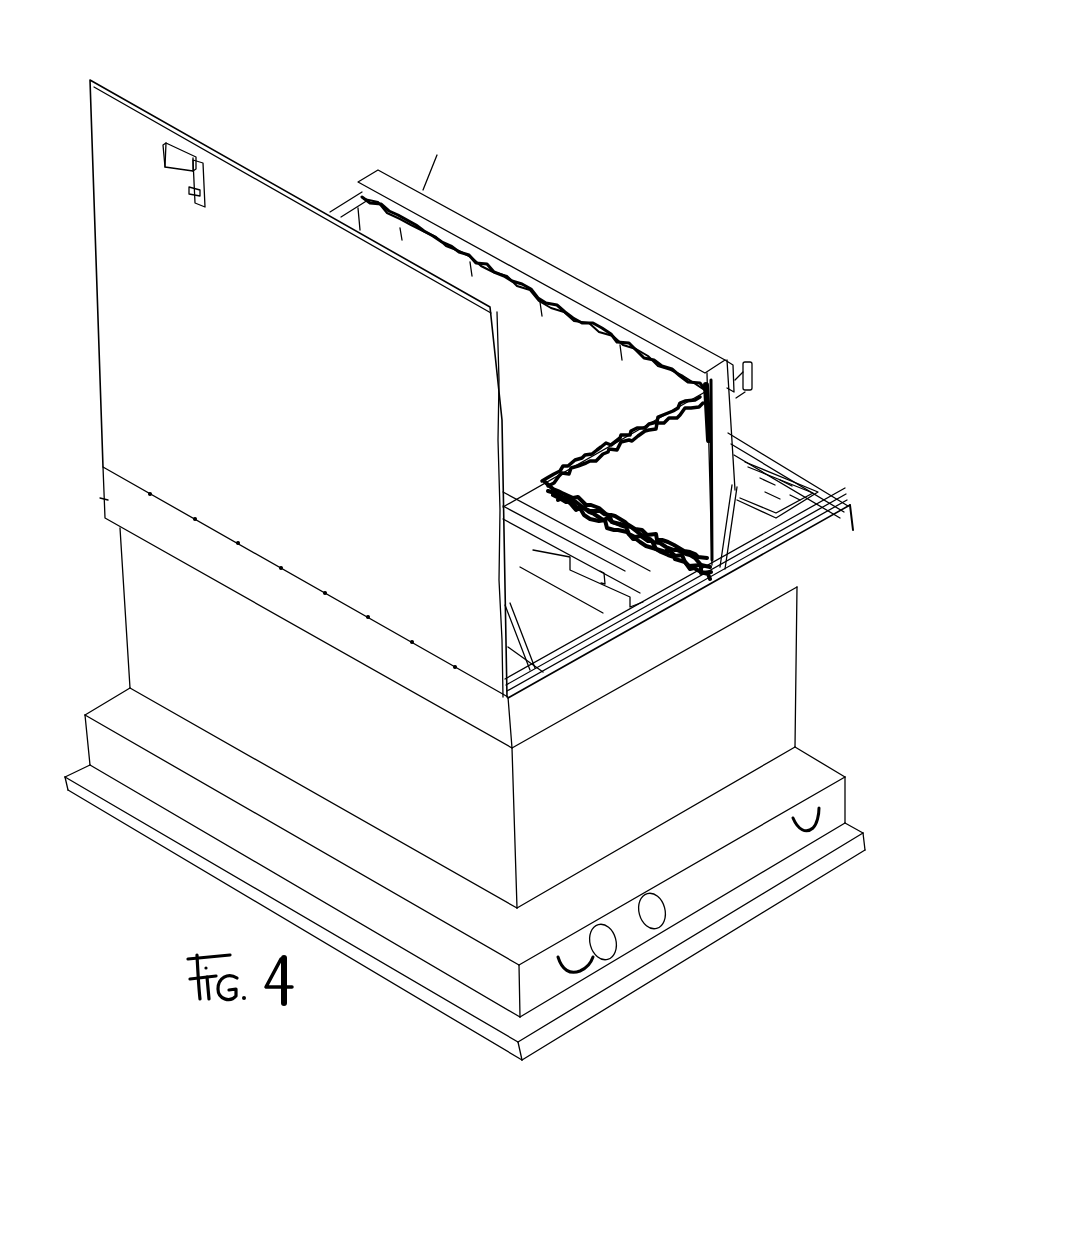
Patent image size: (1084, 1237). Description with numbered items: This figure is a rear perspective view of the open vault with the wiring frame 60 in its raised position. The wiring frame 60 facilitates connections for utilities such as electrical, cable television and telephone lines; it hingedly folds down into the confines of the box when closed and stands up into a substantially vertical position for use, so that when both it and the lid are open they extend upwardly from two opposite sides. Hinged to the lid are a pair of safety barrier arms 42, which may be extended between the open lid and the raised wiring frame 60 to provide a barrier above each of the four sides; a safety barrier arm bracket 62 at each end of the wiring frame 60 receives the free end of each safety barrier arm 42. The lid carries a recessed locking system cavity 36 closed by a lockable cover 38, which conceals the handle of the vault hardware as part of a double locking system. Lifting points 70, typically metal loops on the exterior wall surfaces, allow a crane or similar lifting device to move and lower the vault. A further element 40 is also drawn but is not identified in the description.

The locking system cavity 36 is at (178, 158).
The lockable cover 38 is at (199, 177).
The top frame 40 is at (827, 543).
The safety barrier arms 42 is at (340, 203).
The wiring frame 60 is at (733, 432).
The safety barrier arm bracket 62 is at (750, 362).
The lifting points 70 is at (593, 968).